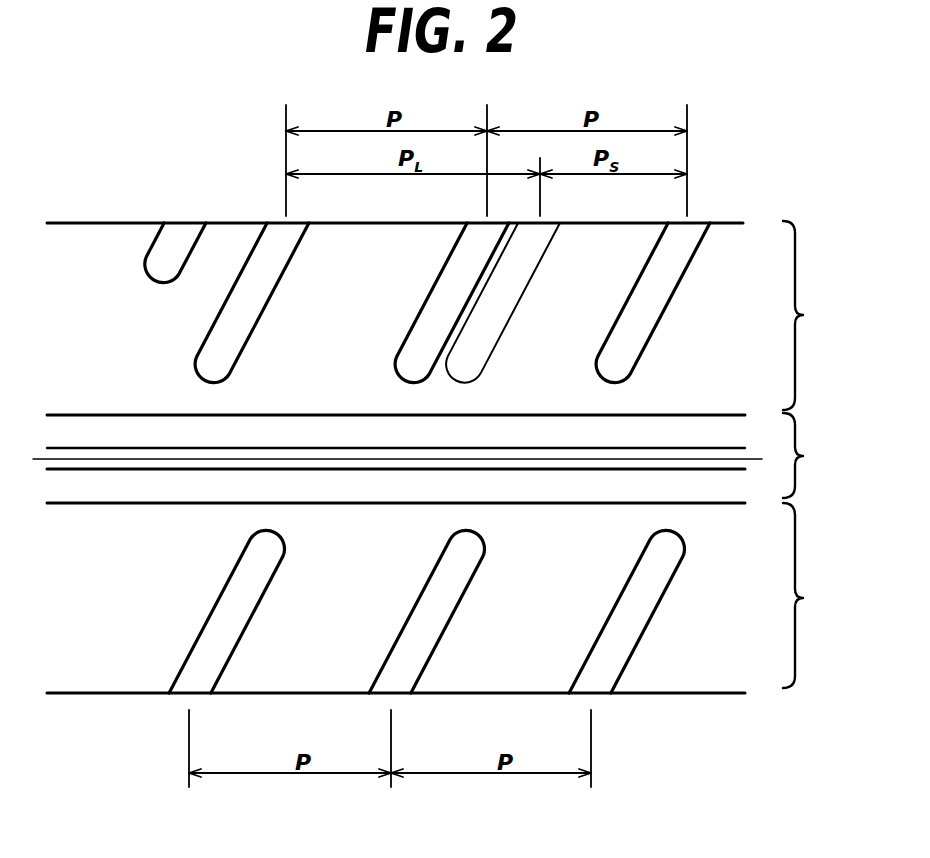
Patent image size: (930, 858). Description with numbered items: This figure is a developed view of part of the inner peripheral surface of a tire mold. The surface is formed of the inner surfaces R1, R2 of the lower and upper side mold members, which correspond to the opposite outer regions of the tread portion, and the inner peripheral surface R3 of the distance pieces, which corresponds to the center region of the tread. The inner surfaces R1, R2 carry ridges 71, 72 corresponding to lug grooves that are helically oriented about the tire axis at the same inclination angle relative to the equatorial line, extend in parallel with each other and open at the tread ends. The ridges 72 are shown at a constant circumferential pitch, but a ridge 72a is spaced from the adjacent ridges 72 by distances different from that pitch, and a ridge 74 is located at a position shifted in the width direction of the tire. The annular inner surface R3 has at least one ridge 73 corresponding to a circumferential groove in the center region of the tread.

The ridges 71 is at (223, 625).
The ridges 72 is at (267, 262).
The ridge 72a is at (512, 287).
The ridge 73 is at (93, 456).
The ridge 74 is at (170, 260).
The inner surface R1 is at (816, 595).
The inner surface R2 is at (816, 315).
The inner peripheral surface R3 is at (816, 455).